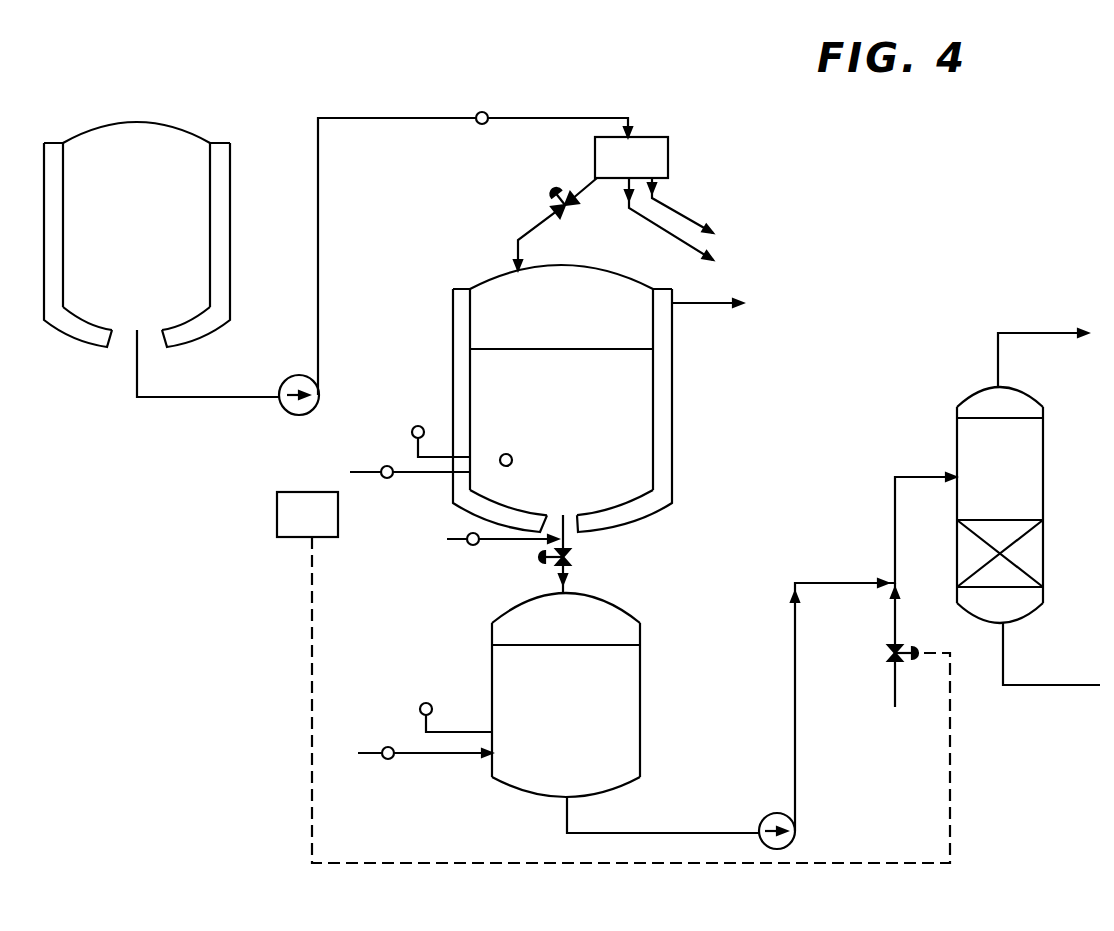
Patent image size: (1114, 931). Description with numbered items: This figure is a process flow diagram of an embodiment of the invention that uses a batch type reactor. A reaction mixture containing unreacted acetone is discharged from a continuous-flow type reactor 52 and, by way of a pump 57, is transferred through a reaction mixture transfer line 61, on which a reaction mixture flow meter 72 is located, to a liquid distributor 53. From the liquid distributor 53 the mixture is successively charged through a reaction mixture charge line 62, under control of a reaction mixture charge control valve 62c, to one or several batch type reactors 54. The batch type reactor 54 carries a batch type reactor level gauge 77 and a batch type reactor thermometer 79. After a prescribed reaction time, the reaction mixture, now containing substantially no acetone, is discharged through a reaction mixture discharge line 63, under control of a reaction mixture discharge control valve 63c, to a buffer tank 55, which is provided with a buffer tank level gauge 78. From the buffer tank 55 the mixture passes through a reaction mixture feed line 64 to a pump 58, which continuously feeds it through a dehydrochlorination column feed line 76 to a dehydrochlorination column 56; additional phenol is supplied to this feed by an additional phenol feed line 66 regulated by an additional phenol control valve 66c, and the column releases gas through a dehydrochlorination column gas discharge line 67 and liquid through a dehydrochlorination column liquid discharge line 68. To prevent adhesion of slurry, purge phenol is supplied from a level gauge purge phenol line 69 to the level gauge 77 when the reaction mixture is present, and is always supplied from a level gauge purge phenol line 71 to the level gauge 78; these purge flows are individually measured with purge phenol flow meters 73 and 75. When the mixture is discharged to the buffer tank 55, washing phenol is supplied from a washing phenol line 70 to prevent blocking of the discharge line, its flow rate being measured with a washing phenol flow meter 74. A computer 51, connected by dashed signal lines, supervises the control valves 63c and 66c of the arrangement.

The computer 51 is at (613, 677).
The continuous-flow type reactor 52 is at (161, 259).
The liquid distributor 53 is at (654, 198).
The batch type reactor 54 is at (598, 398).
The buffer tank 55 is at (566, 695).
The dehydrochlorination column 56 is at (1000, 505).
The pump 57 is at (322, 395).
The pump 58 is at (801, 831).
The reaction mixture transfer line 61 is at (457, 256).
The reaction mixture charge line 62 is at (538, 224).
The reaction mixture charge control valve 62c is at (579, 212).
The reaction mixture discharge line 63 is at (583, 553).
The reaction mixture discharge control valve 63c is at (582, 549).
The reaction mixture feed line 64 is at (663, 815).
The additional phenol feed line 66 is at (900, 661).
The additional phenol control valve 66c is at (875, 655).
The dehydrochlorination column gas discharge line 67 is at (1043, 344).
The dehydrochlorination column liquid discharge line 68 is at (1051, 654).
The level gauge purge phenol line 69 is at (391, 472).
The washing phenol line 70 is at (485, 540).
The level gauge purge phenol line 71 is at (409, 753).
The reaction mixture flow meter 72 is at (483, 103).
The purge phenol flow meter 73 is at (387, 457).
The washing phenol flow meter 74 is at (473, 555).
The purge phenol flow meter 75 is at (388, 738).
The dehydrochlorination column feed line 76 is at (873, 652).
The batch type reactor level gauge 77 is at (437, 423).
The buffer tank level gauge 78 is at (450, 702).
The batch type reactor thermometer 79 is at (507, 443).